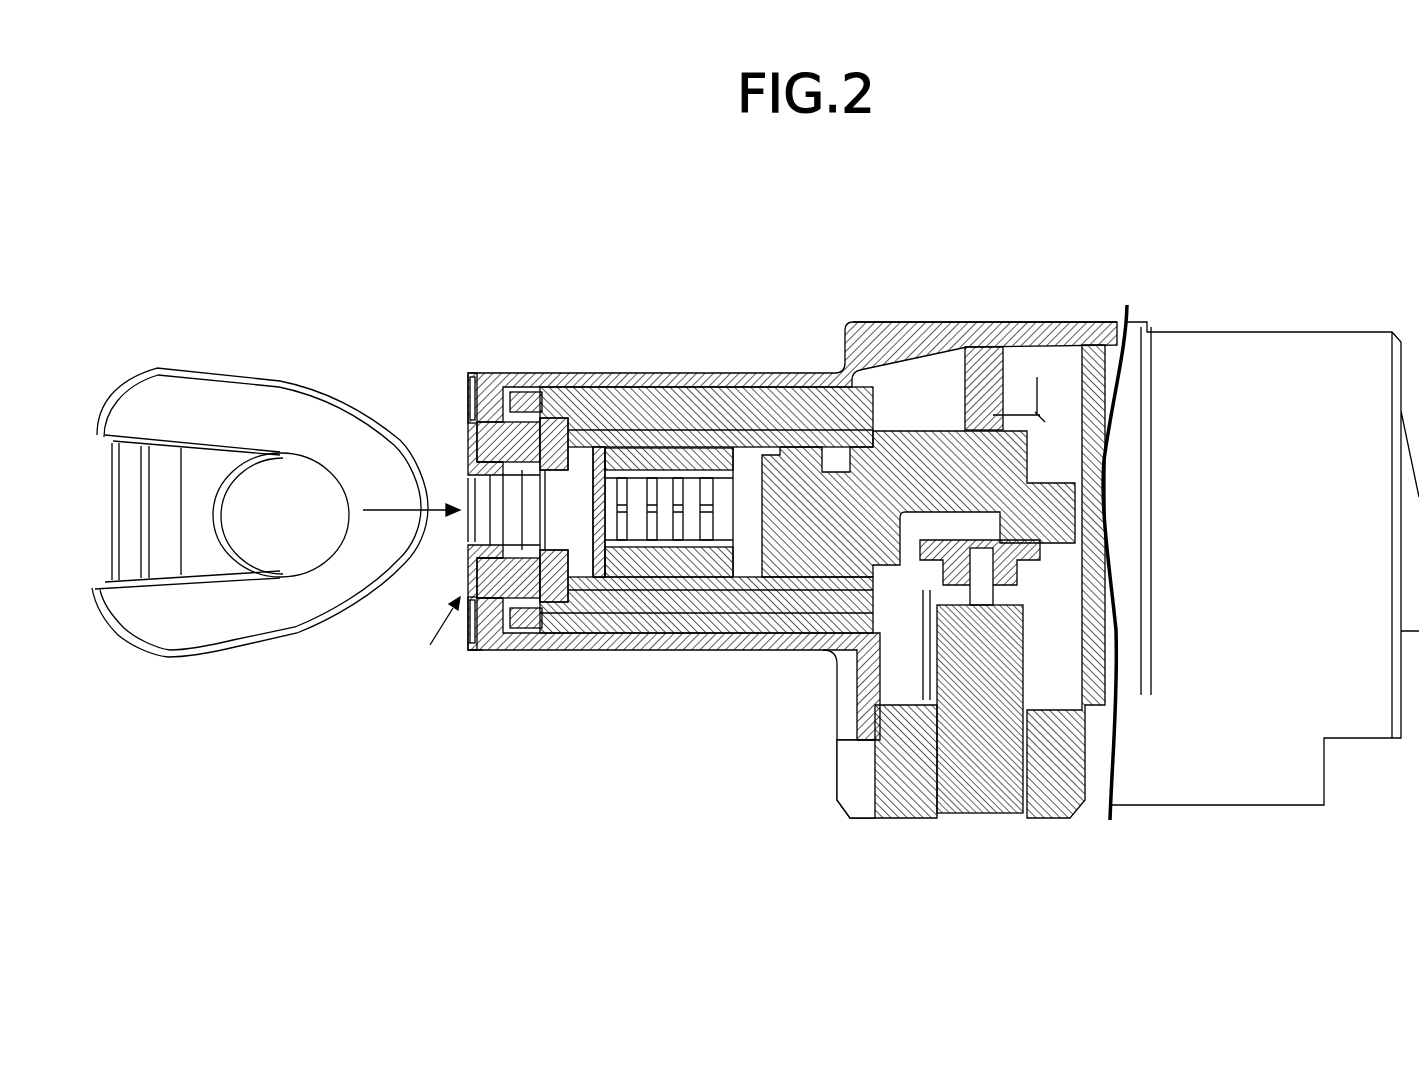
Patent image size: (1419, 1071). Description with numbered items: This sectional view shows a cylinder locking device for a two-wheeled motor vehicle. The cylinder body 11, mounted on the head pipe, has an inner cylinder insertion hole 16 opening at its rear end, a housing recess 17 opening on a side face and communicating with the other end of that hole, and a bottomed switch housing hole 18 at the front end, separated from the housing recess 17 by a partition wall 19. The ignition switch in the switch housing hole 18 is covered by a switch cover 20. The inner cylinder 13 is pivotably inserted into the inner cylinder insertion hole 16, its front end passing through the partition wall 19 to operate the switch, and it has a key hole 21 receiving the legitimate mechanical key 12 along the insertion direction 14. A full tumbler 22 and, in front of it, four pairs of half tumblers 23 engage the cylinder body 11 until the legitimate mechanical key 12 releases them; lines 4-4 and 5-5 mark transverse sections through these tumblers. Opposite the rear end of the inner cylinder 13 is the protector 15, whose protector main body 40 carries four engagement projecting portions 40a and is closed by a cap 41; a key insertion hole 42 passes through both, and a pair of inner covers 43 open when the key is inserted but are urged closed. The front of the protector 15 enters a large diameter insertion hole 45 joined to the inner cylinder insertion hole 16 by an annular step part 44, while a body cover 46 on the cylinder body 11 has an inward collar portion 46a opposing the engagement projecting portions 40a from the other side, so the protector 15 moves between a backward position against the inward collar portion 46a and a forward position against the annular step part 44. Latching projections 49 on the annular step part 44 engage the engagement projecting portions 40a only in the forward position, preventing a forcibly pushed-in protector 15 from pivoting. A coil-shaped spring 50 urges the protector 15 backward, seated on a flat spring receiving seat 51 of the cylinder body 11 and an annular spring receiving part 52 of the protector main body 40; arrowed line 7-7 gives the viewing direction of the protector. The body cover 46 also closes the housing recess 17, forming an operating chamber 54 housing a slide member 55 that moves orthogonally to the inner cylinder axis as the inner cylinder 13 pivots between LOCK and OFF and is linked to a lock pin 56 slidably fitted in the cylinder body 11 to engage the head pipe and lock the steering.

The cylinder body 11 is at (760, 412).
The mechanical key 12 is at (228, 395).
The inner cylinder 13 is at (700, 438).
The insertion direction 14 is at (400, 510).
The protector 15 is at (430, 634).
The inner cylinder insertion hole 16 is at (792, 645).
The housing recess 17 is at (910, 695).
The switch housing hole 18 is at (1120, 668).
The partition wall 19 is at (1110, 633).
The switch cover 20 is at (1240, 355).
The key hole 21 is at (740, 515).
The full tumbler 22 is at (617, 643).
The half tumblers 23 is at (657, 470).
The protector main body 40 is at (487, 413).
The engagement projecting portion 40a is at (478, 376).
The cap 41 is at (505, 422).
The key insertion hole 42 is at (472, 552).
The inner covers 43 is at (475, 468).
The annular step part 44 is at (543, 643).
The large diameter insertion hole 45 is at (517, 380).
The body cover 46 is at (806, 362).
The inward collar portion 46a is at (472, 630).
The latching projections 49 is at (506, 680).
The coil-shaped spring 50 is at (480, 570).
The spring receiving seat 51 is at (574, 445).
The spring receiving part 52 is at (580, 512).
The operating chamber 54 is at (898, 392).
The slide member 55 is at (975, 350).
The lock pin 56 is at (1020, 790).
The section line 4- 4 is at (598, 332).
The section line 5- 5 is at (672, 332).
The arrowed line 7- 7 is at (535, 252).